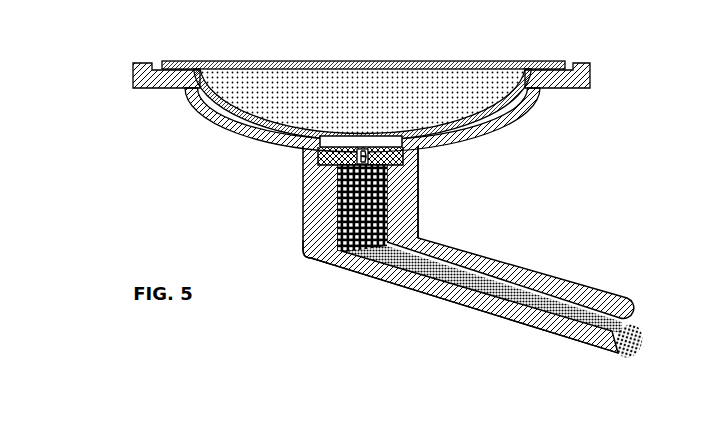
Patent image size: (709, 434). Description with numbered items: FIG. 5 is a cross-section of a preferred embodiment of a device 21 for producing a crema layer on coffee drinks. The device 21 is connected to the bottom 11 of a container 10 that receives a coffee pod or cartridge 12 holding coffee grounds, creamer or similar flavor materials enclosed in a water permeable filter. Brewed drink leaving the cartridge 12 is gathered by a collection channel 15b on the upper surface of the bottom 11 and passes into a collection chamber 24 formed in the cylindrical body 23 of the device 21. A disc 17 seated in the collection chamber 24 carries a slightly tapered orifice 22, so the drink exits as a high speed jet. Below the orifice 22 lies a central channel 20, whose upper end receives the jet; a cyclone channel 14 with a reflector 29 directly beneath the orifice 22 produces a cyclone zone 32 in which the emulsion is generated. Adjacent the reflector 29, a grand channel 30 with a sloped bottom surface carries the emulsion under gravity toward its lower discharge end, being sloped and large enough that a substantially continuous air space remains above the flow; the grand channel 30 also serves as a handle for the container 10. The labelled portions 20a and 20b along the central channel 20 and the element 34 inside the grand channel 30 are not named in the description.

The container 10 is at (172, 111).
The bottom 11 is at (220, 122).
The coffee pod or cartridge 12 is at (231, 51).
The cyclone channel 14 is at (335, 212).
The collection channel 15b is at (272, 127).
The disc 17 is at (307, 165).
The central channel 20 is at (482, 280).
The conduit wall 20a is at (418, 178).
The conduit end 20b is at (623, 322).
The device 21 is at (304, 274).
The orifice 22 is at (418, 157).
The cylindrical body 23 is at (307, 195).
The collection chamber 24 is at (305, 150).
The reflector 29 is at (340, 264).
The grand channel 30 is at (498, 273).
The cyclone zone 32 is at (312, 252).
The heating element 34 is at (543, 303).